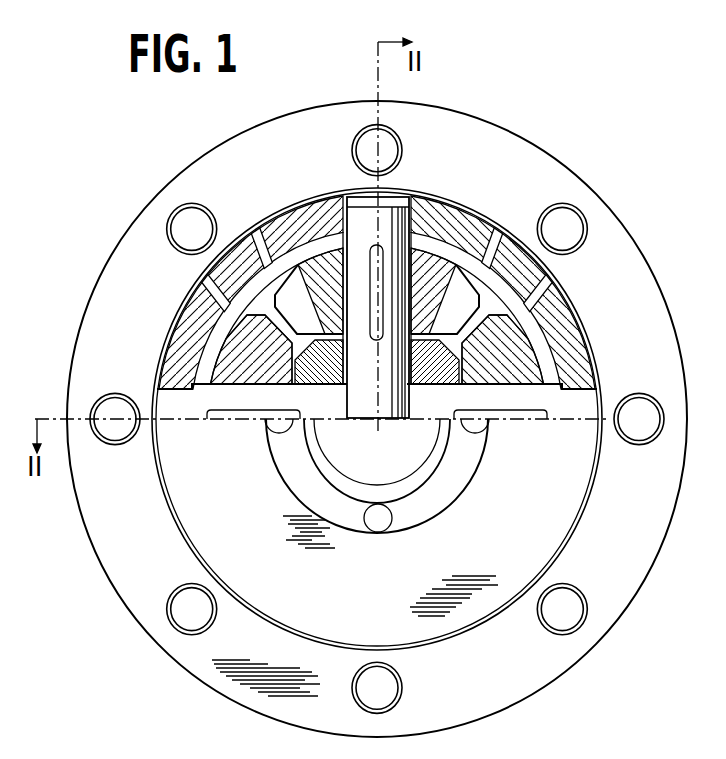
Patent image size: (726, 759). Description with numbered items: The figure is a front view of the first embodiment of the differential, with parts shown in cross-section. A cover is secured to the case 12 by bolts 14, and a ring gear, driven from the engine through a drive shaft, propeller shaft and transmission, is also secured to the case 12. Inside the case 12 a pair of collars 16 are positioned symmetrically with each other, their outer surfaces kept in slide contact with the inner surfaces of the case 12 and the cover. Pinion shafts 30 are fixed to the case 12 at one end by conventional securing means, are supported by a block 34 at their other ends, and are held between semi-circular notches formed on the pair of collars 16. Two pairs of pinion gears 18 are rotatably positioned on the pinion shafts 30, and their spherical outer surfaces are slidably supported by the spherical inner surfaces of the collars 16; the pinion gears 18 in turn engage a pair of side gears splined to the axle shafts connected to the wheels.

The case 12 is at (200, 172).
The bolts 14 is at (575, 227).
The collars 16 is at (305, 248).
The pinion gears 18 is at (232, 372).
The pinion shafts 30 is at (182, 410).
The block 34 is at (323, 377).